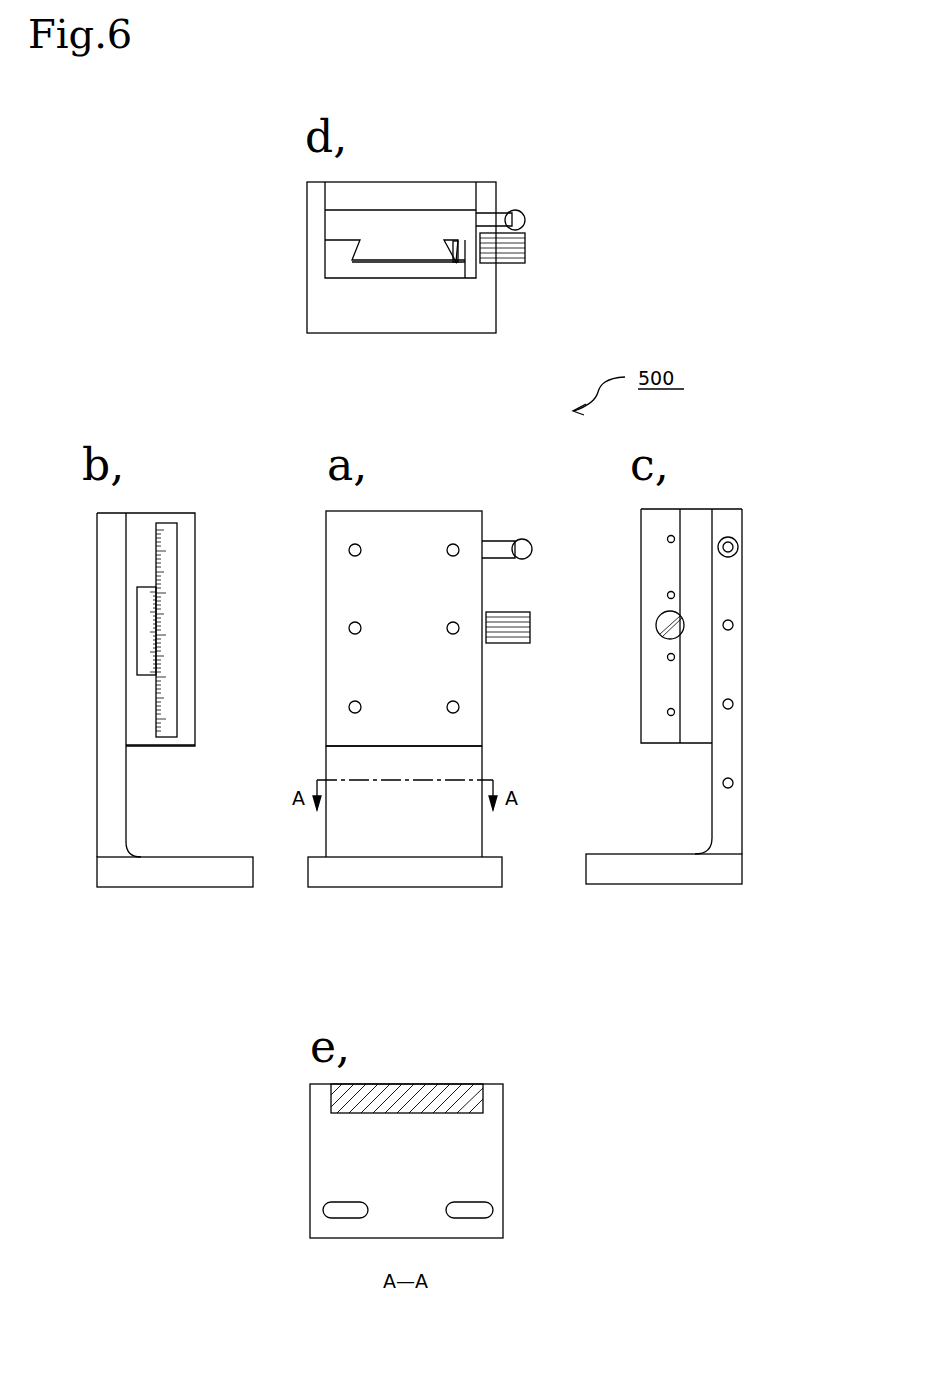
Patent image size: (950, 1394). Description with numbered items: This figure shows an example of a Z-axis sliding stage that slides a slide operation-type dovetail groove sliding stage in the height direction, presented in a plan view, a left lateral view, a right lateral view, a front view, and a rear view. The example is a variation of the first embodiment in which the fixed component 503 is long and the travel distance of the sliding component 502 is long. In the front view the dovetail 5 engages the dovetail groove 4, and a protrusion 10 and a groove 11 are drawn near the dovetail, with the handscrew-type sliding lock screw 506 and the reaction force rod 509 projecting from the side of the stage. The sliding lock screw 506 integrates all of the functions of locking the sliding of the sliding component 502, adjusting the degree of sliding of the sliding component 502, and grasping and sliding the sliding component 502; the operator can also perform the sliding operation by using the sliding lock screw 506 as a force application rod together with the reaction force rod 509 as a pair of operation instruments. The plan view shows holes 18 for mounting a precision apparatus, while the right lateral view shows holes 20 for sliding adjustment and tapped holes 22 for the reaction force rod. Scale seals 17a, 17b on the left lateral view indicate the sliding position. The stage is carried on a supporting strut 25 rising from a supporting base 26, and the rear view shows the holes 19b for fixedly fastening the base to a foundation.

The dovetail groove 4 is at (383, 260).
The dovetail 5 is at (423, 250).
The protrusion 10 is at (458, 240).
The groove 11 is at (465, 258).
The scale seal 17a is at (180, 660).
The scale seal 17b is at (145, 655).
The hole for mounting a precision apparatus 18 is at (453, 543).
The hole for fixedly fastening to a base 19b is at (323, 1210).
The hole for sliding adjustment 20 is at (667, 539).
The tapped hole for reaction force rod 22 is at (735, 705).
The supporting strut 25 is at (100, 835).
The supporting base 26 is at (182, 880).
The sliding component 502 is at (185, 560).
The fixed component 503 is at (145, 745).
The sliding lock screw 506 is at (525, 258).
The reaction force rod 509 is at (523, 213).